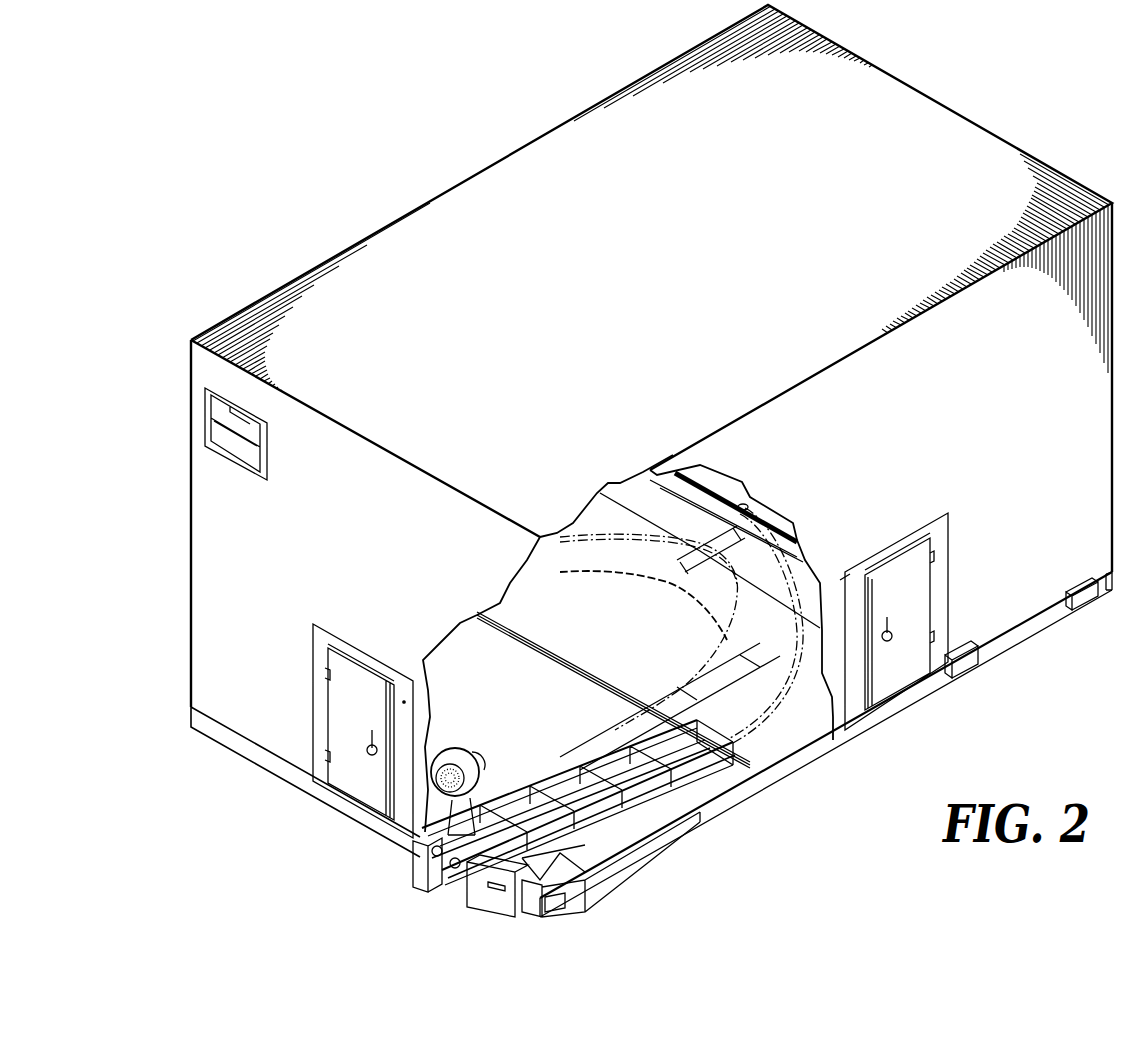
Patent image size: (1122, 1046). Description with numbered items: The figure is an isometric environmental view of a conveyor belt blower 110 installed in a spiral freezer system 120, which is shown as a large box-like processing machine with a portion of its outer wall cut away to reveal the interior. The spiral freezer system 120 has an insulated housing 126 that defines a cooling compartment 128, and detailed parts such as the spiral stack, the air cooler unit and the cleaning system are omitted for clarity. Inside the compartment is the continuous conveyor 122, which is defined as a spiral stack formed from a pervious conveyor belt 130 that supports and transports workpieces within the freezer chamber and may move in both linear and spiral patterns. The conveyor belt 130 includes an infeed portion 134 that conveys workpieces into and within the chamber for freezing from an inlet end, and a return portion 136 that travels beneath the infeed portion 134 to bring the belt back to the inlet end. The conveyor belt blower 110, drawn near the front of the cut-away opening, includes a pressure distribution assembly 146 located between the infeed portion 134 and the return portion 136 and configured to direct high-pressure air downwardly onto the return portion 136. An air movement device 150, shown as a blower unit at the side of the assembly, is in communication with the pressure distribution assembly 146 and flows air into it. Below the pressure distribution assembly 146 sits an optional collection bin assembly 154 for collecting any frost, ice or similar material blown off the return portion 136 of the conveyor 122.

The conveyor belt blower 110 is at (495, 785).
The spiral freezer system 120 is at (1022, 118).
The continuous conveyor 122 is at (790, 727).
The insulated housing 126 is at (892, 93).
The cooling compartment 128 is at (813, 603).
The conveyor belt 130 is at (663, 694).
The infeed portion 134 is at (667, 790).
The return portion 136 is at (738, 793).
The pressure distribution assembly 146 is at (505, 795).
The air movement device 150 is at (468, 740).
The collection bin assembly 154 is at (563, 872).